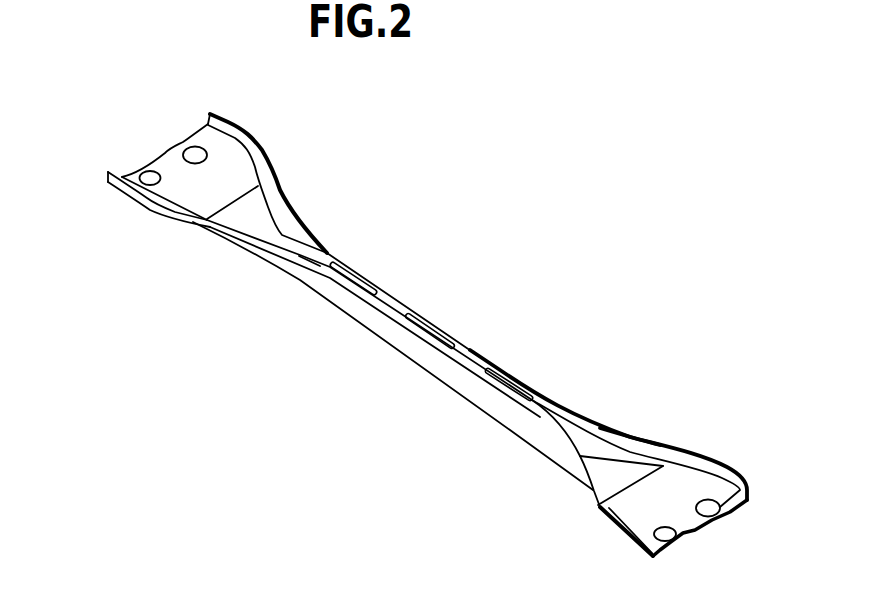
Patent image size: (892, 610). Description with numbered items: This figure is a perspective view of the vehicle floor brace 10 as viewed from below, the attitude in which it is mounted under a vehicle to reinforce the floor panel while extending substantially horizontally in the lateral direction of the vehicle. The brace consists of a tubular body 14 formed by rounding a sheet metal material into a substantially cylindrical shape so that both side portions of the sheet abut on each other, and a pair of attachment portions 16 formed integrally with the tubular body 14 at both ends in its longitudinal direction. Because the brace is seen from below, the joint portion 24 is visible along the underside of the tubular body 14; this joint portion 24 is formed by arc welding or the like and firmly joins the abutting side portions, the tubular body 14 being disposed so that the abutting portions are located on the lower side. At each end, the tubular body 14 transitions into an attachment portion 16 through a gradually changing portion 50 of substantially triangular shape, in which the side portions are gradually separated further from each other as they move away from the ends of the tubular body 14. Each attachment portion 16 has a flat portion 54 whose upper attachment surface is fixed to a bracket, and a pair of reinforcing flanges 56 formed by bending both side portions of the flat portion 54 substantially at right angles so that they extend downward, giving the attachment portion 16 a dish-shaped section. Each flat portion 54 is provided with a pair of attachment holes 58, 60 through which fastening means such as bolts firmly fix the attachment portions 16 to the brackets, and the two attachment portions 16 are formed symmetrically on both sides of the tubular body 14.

The vehicle floor brace 10 is at (522, 210).
The tubular body 14 is at (437, 367).
The attachment portions 16 is at (277, 142).
The joint portion 24 is at (352, 277).
The gradually changing portions 50 is at (245, 213).
The flat portion 54 is at (156, 140).
The reinforcing flanges 56 is at (237, 143).
The attachment hole 58 is at (190, 147).
The attachment hole 60 is at (143, 168).